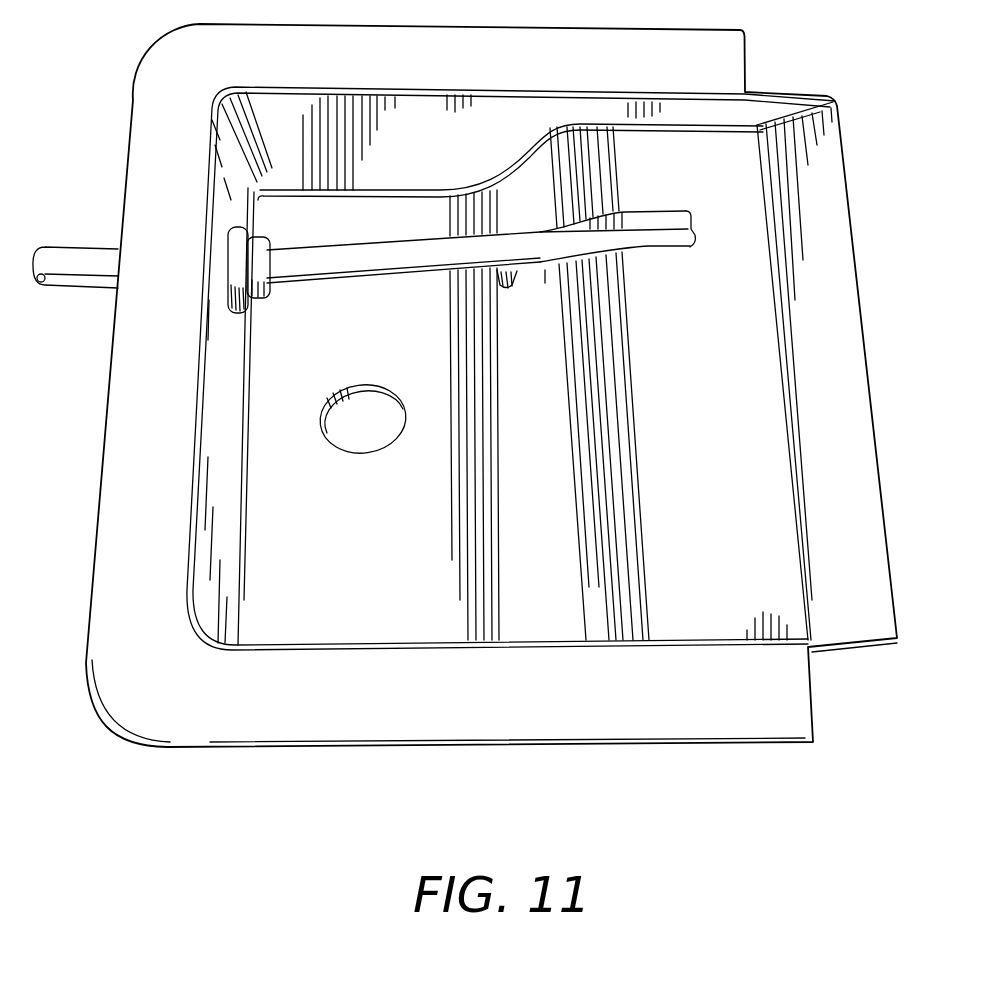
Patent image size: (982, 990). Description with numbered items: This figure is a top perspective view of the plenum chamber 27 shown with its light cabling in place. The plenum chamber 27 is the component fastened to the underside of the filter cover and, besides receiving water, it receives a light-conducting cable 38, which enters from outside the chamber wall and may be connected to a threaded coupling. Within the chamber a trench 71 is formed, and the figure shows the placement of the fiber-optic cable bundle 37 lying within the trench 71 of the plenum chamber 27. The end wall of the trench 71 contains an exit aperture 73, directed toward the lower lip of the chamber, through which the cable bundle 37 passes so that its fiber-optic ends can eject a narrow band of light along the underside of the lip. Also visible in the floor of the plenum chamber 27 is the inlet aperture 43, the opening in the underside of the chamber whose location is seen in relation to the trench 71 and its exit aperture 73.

The plenum chamber 27 is at (265, 497).
The fiber-optic cable bundle 37 is at (412, 245).
The cable 38 is at (88, 260).
The inlet aperture 43 is at (385, 395).
The trench 71 is at (640, 213).
The exit aperture 73 is at (697, 243).